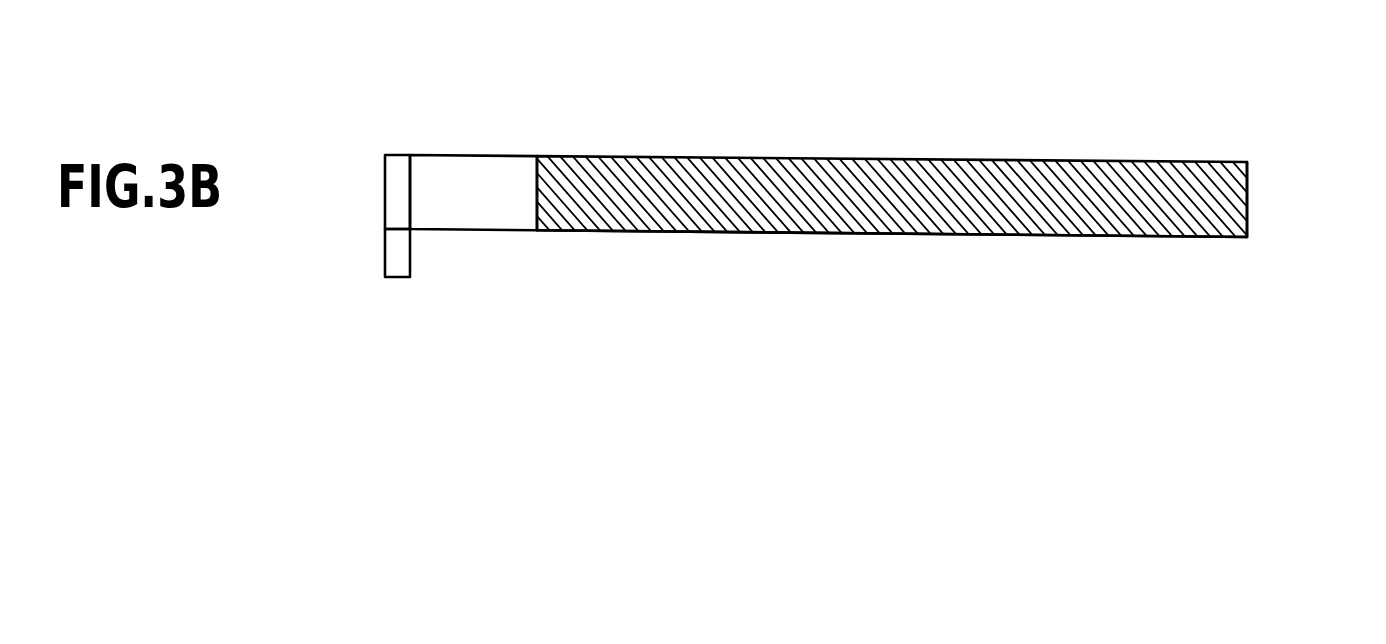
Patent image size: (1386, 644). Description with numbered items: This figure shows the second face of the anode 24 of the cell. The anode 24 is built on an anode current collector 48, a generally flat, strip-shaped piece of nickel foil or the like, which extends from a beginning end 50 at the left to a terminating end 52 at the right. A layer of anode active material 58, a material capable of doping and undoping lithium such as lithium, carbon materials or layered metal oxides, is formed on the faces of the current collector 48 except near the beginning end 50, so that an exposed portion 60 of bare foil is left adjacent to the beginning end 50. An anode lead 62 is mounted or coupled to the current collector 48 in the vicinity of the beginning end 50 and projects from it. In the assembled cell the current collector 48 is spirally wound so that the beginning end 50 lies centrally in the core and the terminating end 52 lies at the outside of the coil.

The anode 24 is at (826, 298).
The anode current collector 48 is at (1037, 237).
The beginning end 50 is at (385, 199).
The terminating end 52 is at (1247, 205).
The anode active material 58 is at (658, 210).
The exposed portion 60 is at (473, 172).
The anode lead 62 is at (400, 254).